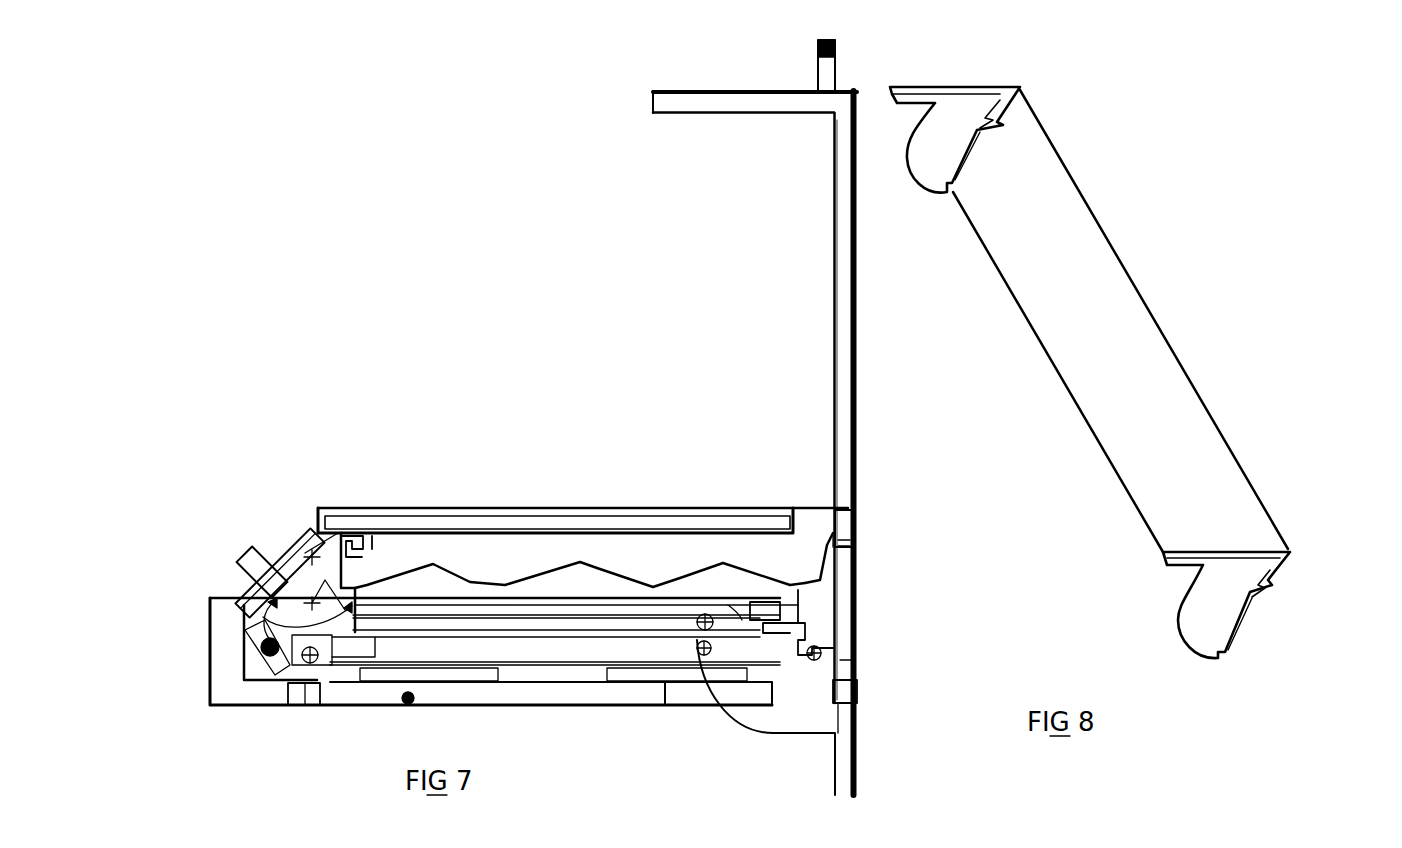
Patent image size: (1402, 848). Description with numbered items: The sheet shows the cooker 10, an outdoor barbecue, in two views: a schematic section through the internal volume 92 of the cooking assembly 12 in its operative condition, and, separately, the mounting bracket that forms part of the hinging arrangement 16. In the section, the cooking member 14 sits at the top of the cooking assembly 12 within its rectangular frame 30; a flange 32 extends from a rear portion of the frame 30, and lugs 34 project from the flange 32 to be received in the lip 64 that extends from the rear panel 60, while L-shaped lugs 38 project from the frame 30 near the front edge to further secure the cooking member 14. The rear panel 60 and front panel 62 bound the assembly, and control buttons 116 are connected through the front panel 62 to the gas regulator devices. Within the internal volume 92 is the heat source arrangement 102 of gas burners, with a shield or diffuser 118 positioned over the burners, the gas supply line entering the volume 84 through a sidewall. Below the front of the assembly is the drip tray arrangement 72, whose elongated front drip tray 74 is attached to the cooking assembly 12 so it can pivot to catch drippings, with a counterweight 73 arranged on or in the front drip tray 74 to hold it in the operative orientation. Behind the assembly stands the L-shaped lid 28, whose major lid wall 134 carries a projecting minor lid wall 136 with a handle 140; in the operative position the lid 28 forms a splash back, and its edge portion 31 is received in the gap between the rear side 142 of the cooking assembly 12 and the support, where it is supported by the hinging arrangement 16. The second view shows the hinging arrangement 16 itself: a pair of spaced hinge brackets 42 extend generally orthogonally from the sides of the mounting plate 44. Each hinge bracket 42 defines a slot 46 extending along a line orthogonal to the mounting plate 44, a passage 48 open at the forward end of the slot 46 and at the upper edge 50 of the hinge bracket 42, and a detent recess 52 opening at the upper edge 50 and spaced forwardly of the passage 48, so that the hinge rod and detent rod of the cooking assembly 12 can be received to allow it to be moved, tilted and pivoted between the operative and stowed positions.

In FIG. 7, the cooker 10 is at (287, 192).
In FIG. 7, the cooking assembly 12 is at (335, 443).
In FIG. 7, the cooking member 14 is at (518, 524).
In FIG. 7, the hinging arrangement 16 is at (885, 656).
In FIG. 7, the lid 28 is at (858, 362).
In FIG. 7, the rectangular frame 30 is at (405, 505).
In FIG. 7, the edge portion 31 is at (915, 678).
In FIG. 7, the flange 32 is at (808, 492).
In FIG. 7, the lugs 34 is at (853, 517).
In FIG. 7, the L-shaped lugs 38 is at (358, 540).
In FIG. 7, the hinge brackets 42 is at (830, 688).
In FIG. 8, the hinge brackets 42 is at (975, 110).
In FIG. 7, the mounting plate 44 is at (855, 718).
In FIG. 8, the mounting plate 44 is at (1148, 300).
In FIG. 7, the slot 46 is at (838, 634).
In FIG. 8, the slot 46 is at (1008, 92).
In FIG. 7, the passage 48 is at (825, 622).
In FIG. 8, the passage 48 is at (1012, 127).
In FIG. 7, the upper edge 50 is at (735, 623).
In FIG. 8, the upper edge 50 is at (968, 150).
In FIG. 8, the detent recess 52 is at (975, 198).
In FIG. 7, the rear panel 60 is at (830, 588).
In FIG. 7, the front panel 62 is at (300, 553).
In FIG. 7, the lip 64 is at (855, 533).
In FIG. 7, the drip tray arrangement 72 is at (292, 725).
In FIG. 7, the counterweight 73 is at (398, 708).
In FIG. 7, the front drip tray 74 is at (210, 660).
In FIG. 7, the volume 84 is at (552, 702).
In FIG. 7, the internal volume 92 is at (508, 656).
In FIG. 7, the heat source arrangement 102 is at (470, 578).
In FIG. 7, the control buttons 116 is at (252, 560).
In FIG. 7, the shield or diffuser 118 is at (598, 563).
In FIG. 7, the major lid wall 134 is at (860, 306).
In FIG. 7, the minor lid wall 136 is at (700, 90).
In FIG. 7, the handle 140 is at (832, 42).
In FIG. 7, the rear side 142 is at (940, 478).